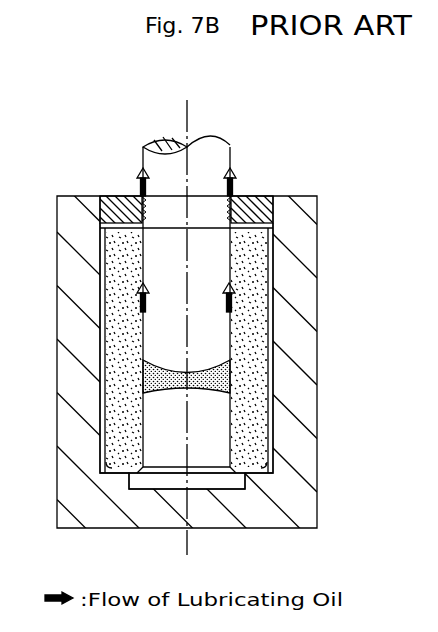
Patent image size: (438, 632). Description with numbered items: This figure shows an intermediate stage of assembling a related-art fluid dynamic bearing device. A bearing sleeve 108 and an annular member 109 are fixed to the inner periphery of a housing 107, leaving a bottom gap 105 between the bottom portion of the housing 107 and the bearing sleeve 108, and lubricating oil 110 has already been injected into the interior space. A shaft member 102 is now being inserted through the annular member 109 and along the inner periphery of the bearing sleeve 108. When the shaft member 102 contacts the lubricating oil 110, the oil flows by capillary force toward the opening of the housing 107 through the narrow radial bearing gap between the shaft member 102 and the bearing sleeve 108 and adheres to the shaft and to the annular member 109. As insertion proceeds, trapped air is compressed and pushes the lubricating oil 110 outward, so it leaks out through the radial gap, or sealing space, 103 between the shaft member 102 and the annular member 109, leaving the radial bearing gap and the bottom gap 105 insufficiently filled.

The shaft member 102 is at (213, 157).
The radial gap (sealing space) 103 is at (248, 200).
The bottom gap 105 is at (147, 480).
The housing 107 is at (70, 321).
The bearing sleeve 108 is at (256, 355).
The annular member 109 is at (118, 200).
The lubricating oil 110 is at (232, 380).